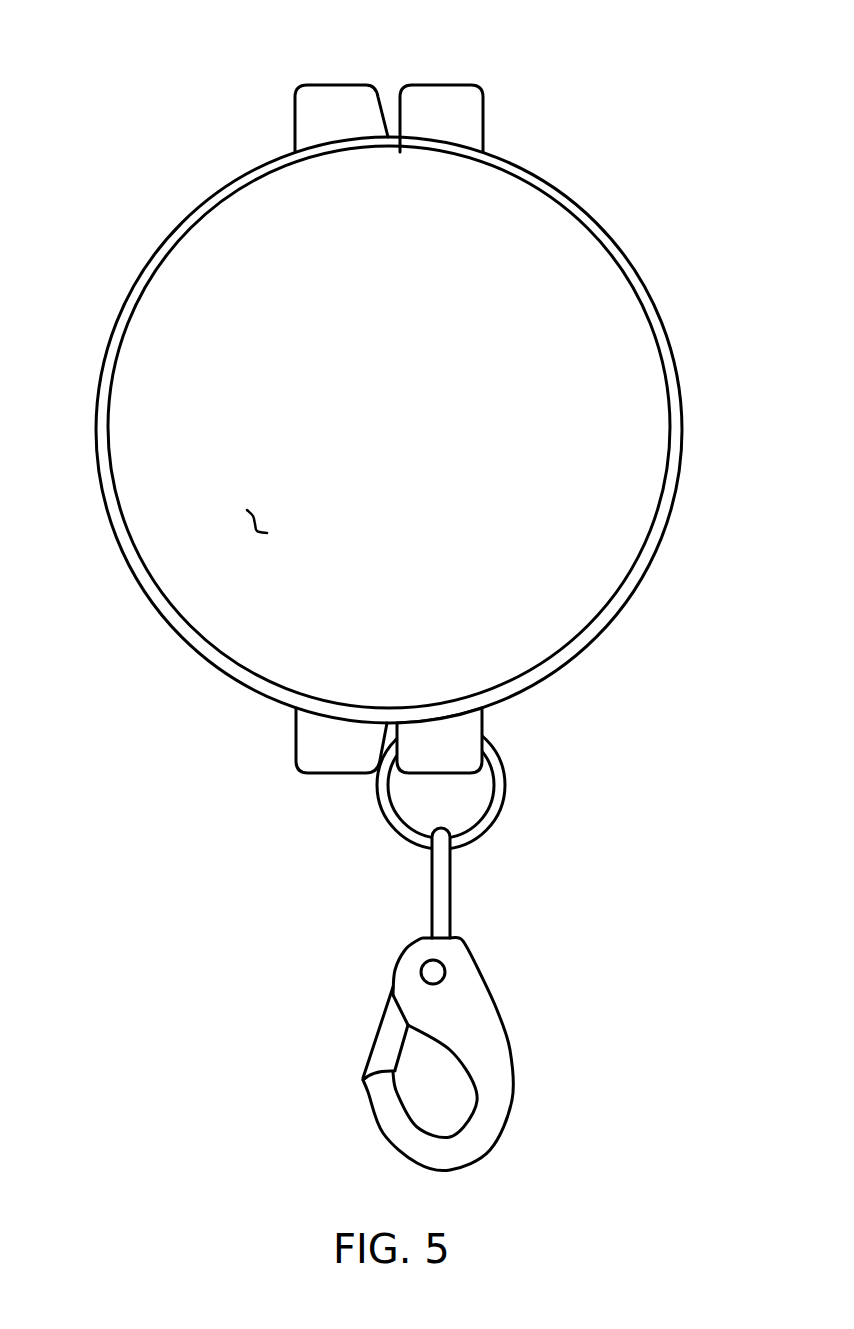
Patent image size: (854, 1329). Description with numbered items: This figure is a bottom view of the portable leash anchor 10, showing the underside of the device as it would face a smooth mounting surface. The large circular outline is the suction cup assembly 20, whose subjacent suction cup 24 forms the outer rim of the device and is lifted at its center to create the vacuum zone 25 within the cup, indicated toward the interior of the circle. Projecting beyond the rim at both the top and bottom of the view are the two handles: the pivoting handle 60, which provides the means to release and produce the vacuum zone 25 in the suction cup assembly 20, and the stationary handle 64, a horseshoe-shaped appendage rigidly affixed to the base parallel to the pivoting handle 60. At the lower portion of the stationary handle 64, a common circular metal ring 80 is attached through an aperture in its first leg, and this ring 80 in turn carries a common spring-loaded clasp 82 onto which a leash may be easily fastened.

The portable leash anchor 10 is at (121, 127).
The suction cup assembly 20 is at (640, 255).
The suction cup 24 is at (673, 422).
The vacuum zone 25 is at (250, 523).
The pivoting handle 60 is at (336, 98).
The stationary handle 64 is at (438, 98).
The circular metal ring 80 is at (497, 785).
The spring-loaded clasp 82 is at (450, 912).